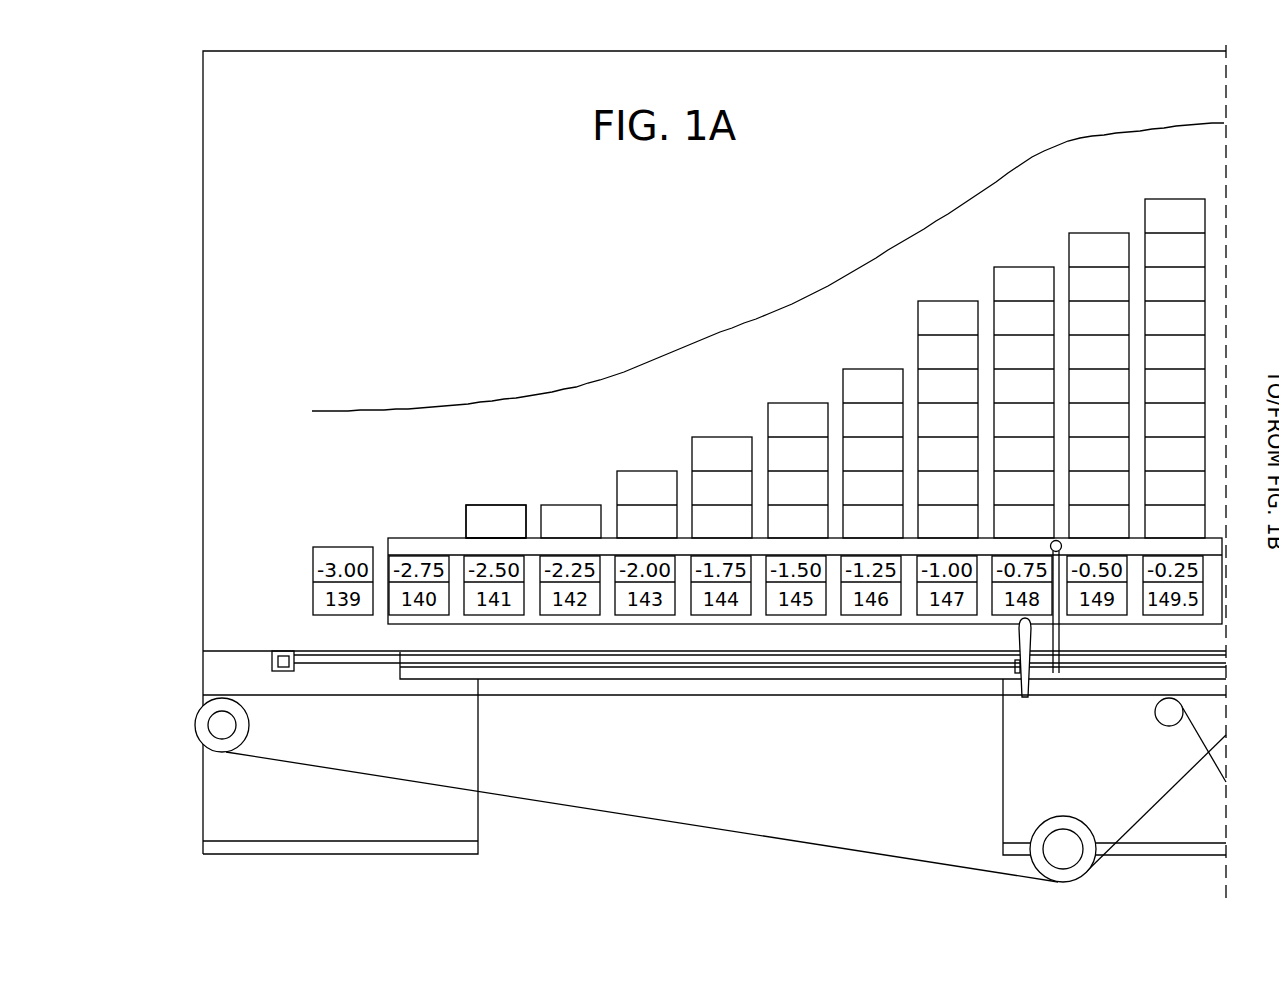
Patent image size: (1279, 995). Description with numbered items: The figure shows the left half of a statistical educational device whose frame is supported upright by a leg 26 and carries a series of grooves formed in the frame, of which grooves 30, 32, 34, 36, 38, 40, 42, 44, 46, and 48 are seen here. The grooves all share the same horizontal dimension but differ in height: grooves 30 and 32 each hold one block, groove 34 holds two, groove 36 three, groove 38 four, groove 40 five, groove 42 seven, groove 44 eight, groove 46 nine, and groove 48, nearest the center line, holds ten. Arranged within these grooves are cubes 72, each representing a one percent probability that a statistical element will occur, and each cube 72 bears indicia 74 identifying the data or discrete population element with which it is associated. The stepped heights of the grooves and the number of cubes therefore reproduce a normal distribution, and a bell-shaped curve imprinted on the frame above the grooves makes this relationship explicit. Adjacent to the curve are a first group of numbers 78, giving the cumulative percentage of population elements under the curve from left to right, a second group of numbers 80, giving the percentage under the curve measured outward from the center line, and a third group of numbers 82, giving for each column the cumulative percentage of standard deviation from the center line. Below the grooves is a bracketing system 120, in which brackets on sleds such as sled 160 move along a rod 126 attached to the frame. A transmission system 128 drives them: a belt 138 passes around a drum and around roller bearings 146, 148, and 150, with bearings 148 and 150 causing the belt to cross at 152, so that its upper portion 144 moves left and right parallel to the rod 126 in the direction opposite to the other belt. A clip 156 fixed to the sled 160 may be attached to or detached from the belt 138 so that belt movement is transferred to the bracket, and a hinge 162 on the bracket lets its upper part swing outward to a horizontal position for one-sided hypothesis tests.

The leg 26 is at (228, 810).
The groove 30 is at (501, 505).
The groove 32 is at (576, 505).
The groove 34 is at (642, 471).
The groove 36 is at (725, 437).
The groove 38 is at (800, 403).
The groove 40 is at (870, 369).
The groove 42 is at (948, 302).
The groove 44 is at (1025, 267).
The groove 46 is at (1098, 233).
The groove 48 is at (1180, 199).
The cube 72 is at (470, 508).
The indicia 74 is at (470, 528).
The first group of numbers 78 is at (318, 366).
The second group of numbers 80 is at (318, 388).
The third group of numbers 82 is at (318, 434).
The bracketing system 120 is at (995, 777).
The rod 126 is at (338, 659).
The transmission system 128 is at (1168, 760).
The second belt 138 is at (725, 696).
The upper portion of belt 144 is at (588, 696).
The roller bearing 146 is at (249, 725).
The roller bearing 148 is at (1155, 712).
The roller bearing 150 is at (1060, 816).
The belt crossing 152 is at (1206, 782).
The clip 156 is at (1012, 637).
The sled 160 is at (1102, 666).
The hinge 162 is at (1063, 548).